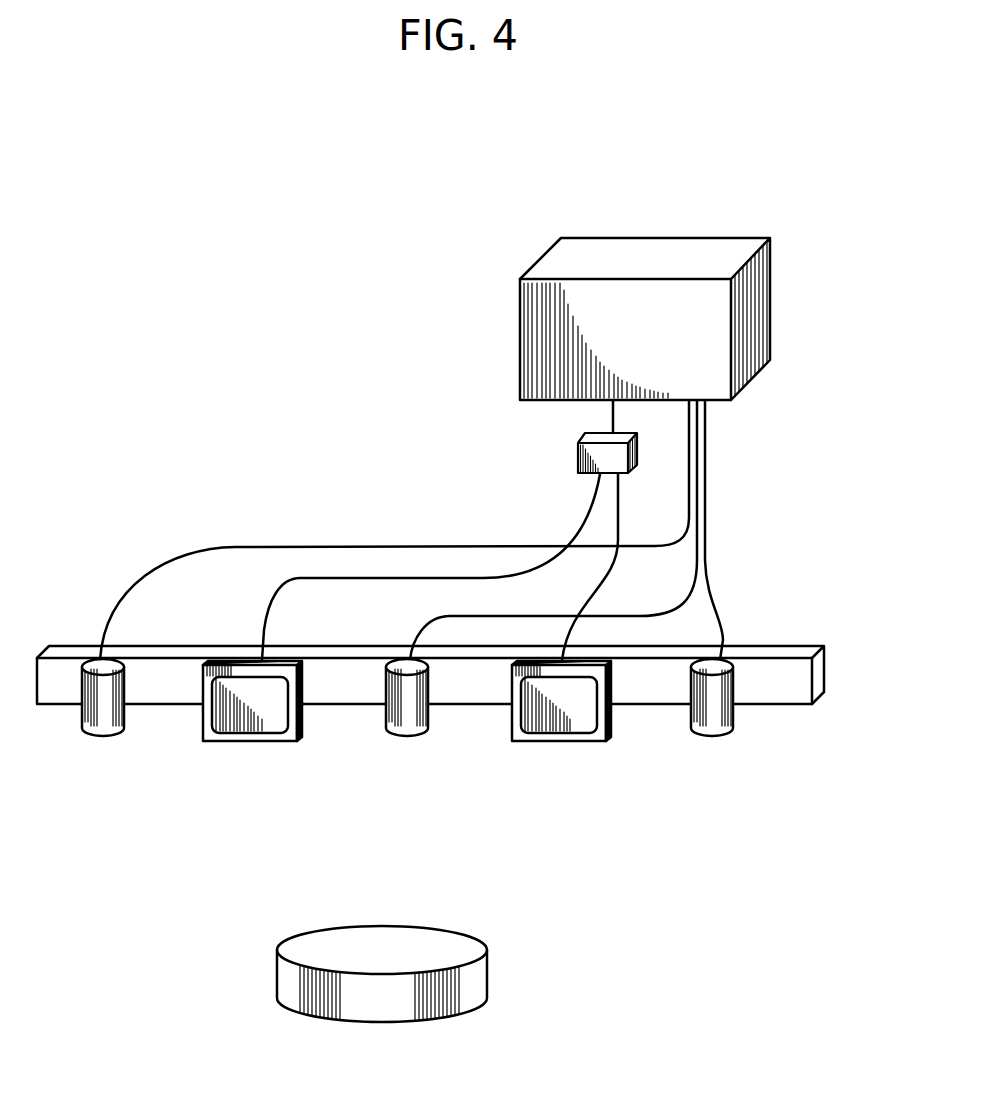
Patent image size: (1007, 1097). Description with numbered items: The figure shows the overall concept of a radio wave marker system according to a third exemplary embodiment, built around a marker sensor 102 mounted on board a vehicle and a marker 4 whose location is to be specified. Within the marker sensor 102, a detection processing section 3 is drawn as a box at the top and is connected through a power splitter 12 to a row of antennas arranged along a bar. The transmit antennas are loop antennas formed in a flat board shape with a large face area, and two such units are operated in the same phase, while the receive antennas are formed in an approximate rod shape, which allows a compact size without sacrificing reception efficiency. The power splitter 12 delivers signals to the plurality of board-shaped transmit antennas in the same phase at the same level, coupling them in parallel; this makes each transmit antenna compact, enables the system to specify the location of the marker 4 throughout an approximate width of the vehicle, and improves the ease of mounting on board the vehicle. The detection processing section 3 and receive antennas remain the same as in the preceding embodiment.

The detection processing section 3 is at (572, 250).
The marker 4 is at (460, 938).
The power splitter 12 is at (638, 455).
The marker sensor 102 is at (831, 240).